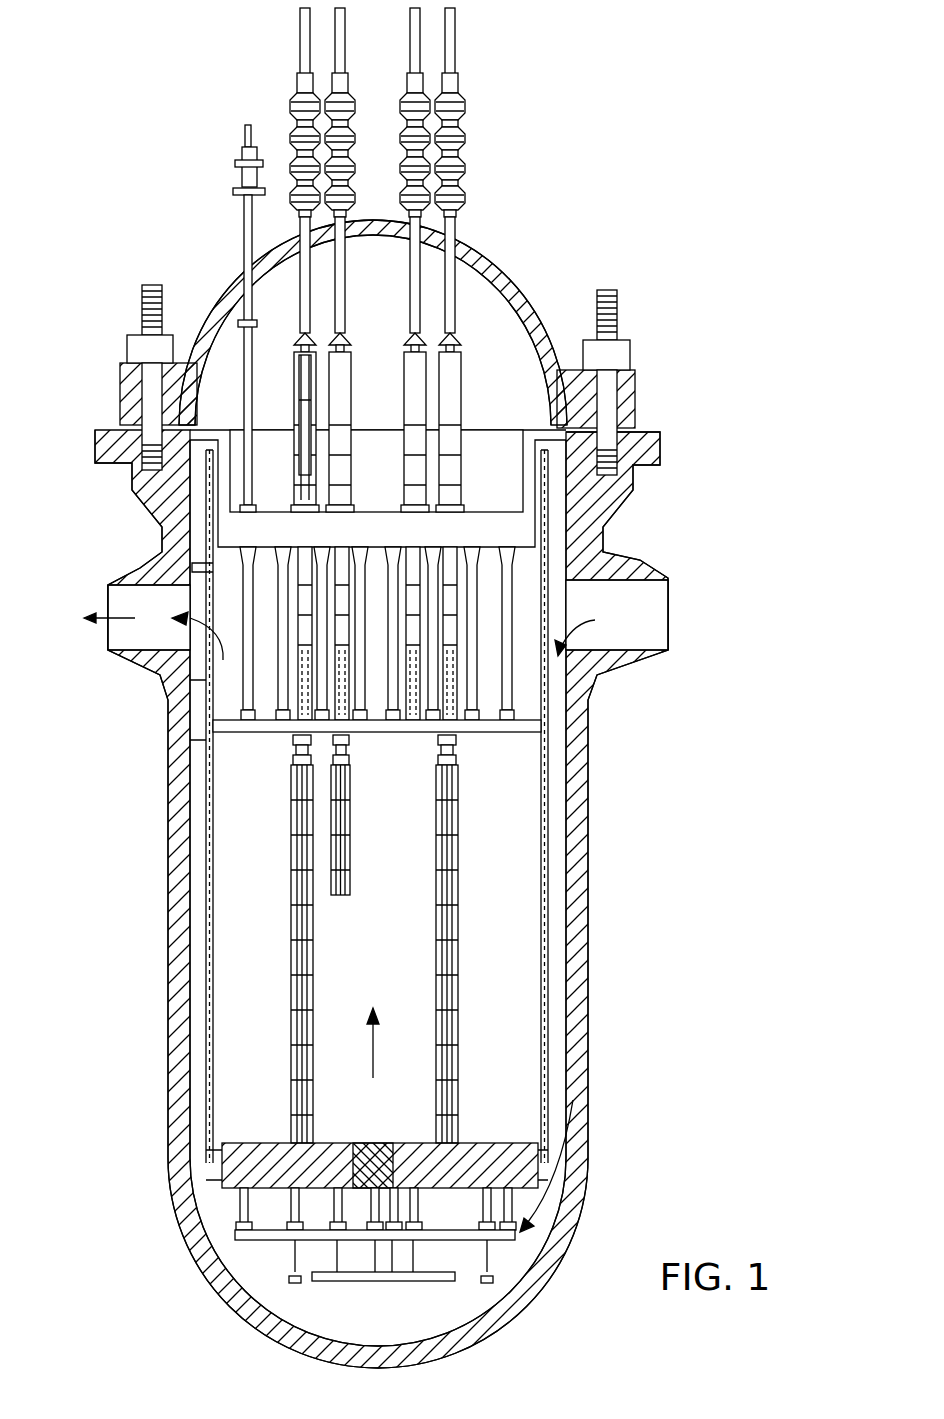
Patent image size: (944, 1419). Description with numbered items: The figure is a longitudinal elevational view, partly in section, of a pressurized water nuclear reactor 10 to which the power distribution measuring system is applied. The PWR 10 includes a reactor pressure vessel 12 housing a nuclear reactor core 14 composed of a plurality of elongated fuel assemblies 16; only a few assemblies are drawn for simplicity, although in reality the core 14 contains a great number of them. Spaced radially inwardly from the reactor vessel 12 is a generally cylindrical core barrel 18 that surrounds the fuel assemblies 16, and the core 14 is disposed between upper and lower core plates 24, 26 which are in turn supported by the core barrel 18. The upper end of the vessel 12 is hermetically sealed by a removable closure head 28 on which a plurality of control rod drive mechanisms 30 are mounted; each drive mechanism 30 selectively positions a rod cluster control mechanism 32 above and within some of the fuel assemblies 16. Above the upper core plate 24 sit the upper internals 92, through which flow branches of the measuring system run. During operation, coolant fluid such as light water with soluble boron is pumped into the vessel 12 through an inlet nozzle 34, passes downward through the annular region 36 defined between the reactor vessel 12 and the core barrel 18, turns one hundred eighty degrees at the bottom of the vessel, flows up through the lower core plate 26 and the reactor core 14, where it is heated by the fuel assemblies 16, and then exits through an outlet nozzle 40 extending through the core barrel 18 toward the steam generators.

The pressurized water nuclear reactor 10 is at (574, 290).
The reactor pressure vessel 12 is at (597, 547).
The nuclear reactor core 14 is at (238, 1073).
The fuel assemblies 16 is at (313, 992).
The core barrel 18 is at (212, 702).
The upper core plate 24 is at (490, 732).
The lower core plate 26 is at (490, 1150).
The removable closure head 28 is at (507, 270).
The control rod drive mechanisms 30 is at (392, 376).
The rod cluster control mechanism 32 is at (413, 680).
The inlet nozzles 34 is at (630, 568).
The annular region 36 is at (560, 862).
The outlet nozzles 40 is at (137, 560).
The upper internals 92 is at (481, 413).